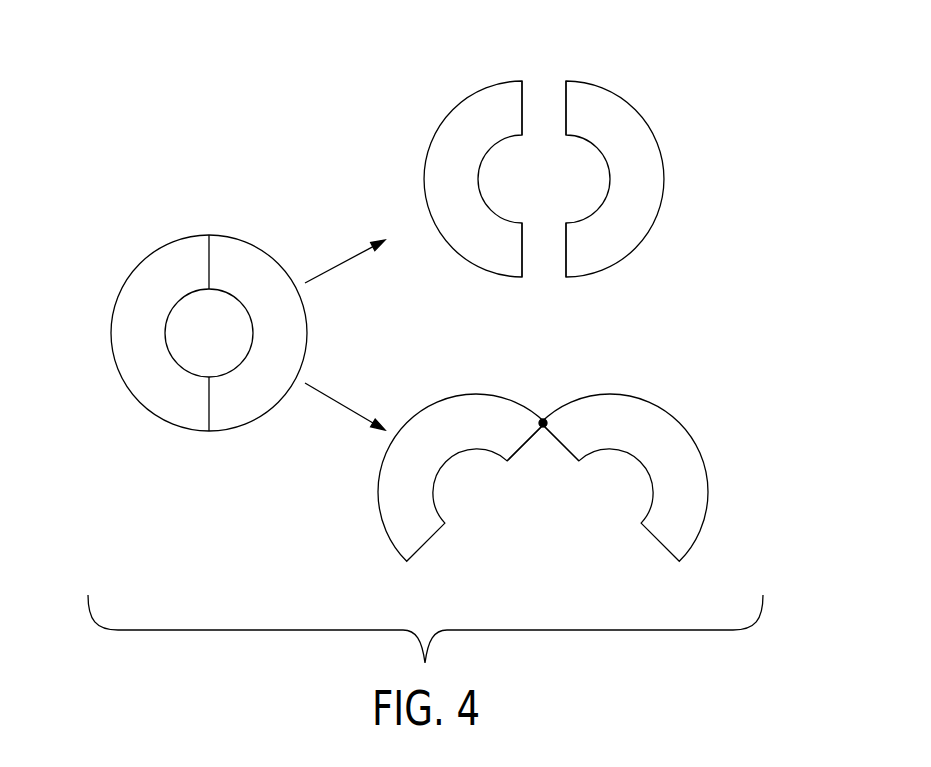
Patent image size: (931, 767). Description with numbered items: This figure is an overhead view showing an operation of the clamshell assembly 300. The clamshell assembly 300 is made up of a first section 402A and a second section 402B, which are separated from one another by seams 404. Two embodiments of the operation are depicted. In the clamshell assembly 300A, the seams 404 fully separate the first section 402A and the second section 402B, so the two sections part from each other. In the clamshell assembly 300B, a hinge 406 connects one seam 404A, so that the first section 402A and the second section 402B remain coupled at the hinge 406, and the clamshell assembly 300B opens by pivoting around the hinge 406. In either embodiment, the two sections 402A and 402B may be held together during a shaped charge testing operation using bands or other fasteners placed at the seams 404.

The clamshell assembly 300 is at (118, 220).
The clamshell assembly 300A is at (691, 235).
The clamshell assembly 300B is at (733, 441).
The first section 402A is at (155, 397).
The second section 402B is at (265, 397).
The seams 404 is at (209, 235).
The seam 404A is at (540, 471).
The hinge 406 is at (543, 415).